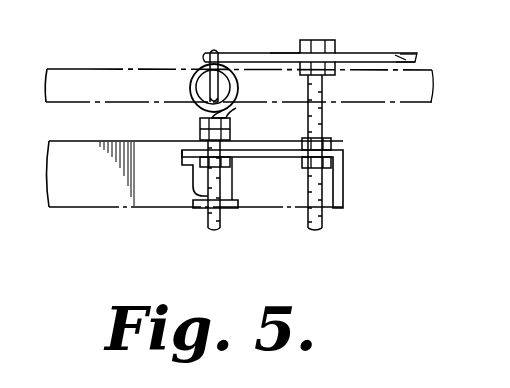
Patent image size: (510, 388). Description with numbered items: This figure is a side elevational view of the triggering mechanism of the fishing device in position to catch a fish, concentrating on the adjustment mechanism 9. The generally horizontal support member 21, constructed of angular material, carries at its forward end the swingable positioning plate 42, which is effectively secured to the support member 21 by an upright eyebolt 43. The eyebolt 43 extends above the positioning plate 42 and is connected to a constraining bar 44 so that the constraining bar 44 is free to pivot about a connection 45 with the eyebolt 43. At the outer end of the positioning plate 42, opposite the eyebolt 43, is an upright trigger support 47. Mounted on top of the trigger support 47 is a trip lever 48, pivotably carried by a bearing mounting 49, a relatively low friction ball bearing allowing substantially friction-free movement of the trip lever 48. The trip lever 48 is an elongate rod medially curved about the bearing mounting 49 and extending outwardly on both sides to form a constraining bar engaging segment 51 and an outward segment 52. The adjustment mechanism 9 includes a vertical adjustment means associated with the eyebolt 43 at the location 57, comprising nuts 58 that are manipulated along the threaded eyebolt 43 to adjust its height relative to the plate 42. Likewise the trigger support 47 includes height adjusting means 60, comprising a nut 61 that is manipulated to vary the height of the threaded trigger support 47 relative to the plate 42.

The adjustment mechanism 9 is at (384, 172).
The horizontal support member 21 is at (96, 209).
The positioning plate 42 is at (343, 190).
The eyebolt 43 is at (190, 70).
The constraining bar 44 is at (232, 52).
The connection 45 is at (210, 50).
The upright trigger support 47 is at (239, 85).
The trip lever 48 is at (398, 53).
The bearing mounting 49 is at (335, 48).
The constraining bar engaging segment 51 is at (283, 53).
The outward segment 52 is at (413, 63).
The vertical adjustment means 57 is at (158, 132).
The nuts 58 is at (202, 124).
The height adjusting means 60 is at (347, 132).
The nut 61 is at (300, 142).